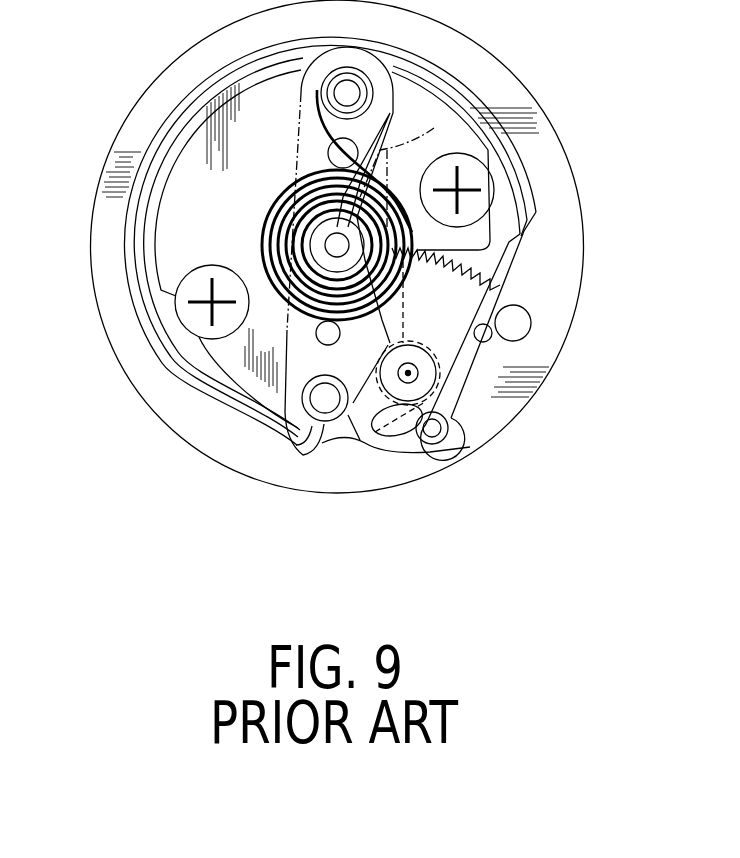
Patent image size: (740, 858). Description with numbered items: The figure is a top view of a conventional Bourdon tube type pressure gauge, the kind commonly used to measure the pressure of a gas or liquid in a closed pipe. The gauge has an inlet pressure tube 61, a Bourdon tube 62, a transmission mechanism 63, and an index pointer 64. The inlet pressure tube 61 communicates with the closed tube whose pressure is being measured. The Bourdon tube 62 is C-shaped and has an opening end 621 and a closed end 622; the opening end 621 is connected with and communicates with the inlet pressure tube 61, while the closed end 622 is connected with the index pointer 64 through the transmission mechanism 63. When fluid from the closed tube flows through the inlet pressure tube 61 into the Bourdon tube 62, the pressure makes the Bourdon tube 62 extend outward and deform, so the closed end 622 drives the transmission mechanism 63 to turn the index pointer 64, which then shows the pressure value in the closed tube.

The inlet pressure tube 61 is at (335, 415).
The Bourdon tube 62 is at (150, 320).
The opening end 621 is at (303, 452).
The closed end 622 is at (513, 270).
The transmission mechanism 63 is at (455, 364).
The index pointer 64 is at (434, 128).